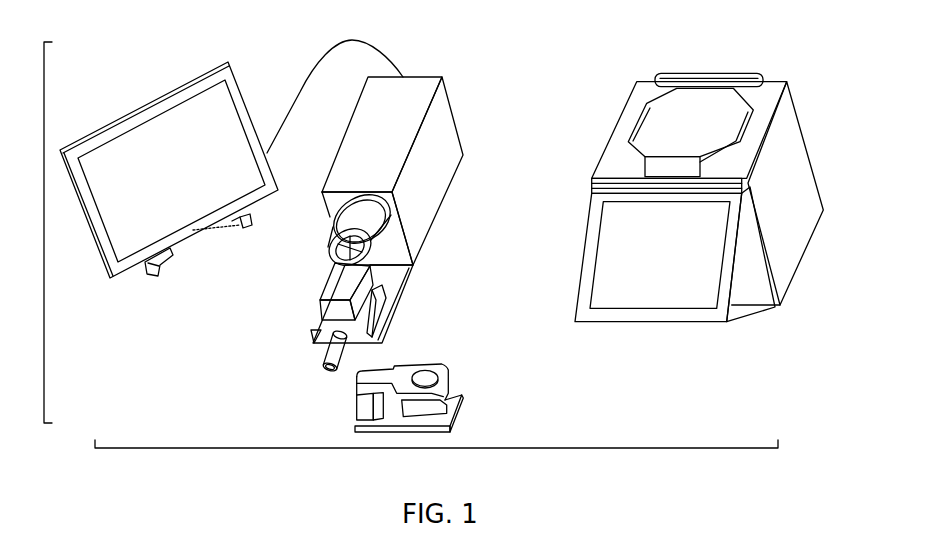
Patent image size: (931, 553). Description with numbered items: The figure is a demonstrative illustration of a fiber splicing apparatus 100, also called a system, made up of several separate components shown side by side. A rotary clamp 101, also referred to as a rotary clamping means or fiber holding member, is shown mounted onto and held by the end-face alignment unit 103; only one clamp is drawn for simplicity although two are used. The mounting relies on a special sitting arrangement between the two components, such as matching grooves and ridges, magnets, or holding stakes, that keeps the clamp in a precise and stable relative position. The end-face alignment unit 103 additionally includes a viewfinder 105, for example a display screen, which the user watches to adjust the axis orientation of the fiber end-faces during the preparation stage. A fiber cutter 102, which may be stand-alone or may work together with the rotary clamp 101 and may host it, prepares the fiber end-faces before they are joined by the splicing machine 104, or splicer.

The fiber splicing apparatus 100 is at (768, 410).
The rotary clamp 101 is at (360, 288).
The fiber cutter 102 is at (445, 373).
The end-face alignment unit 103 is at (412, 182).
The splicing machine 104 is at (650, 135).
The viewfinder 105 is at (222, 103).